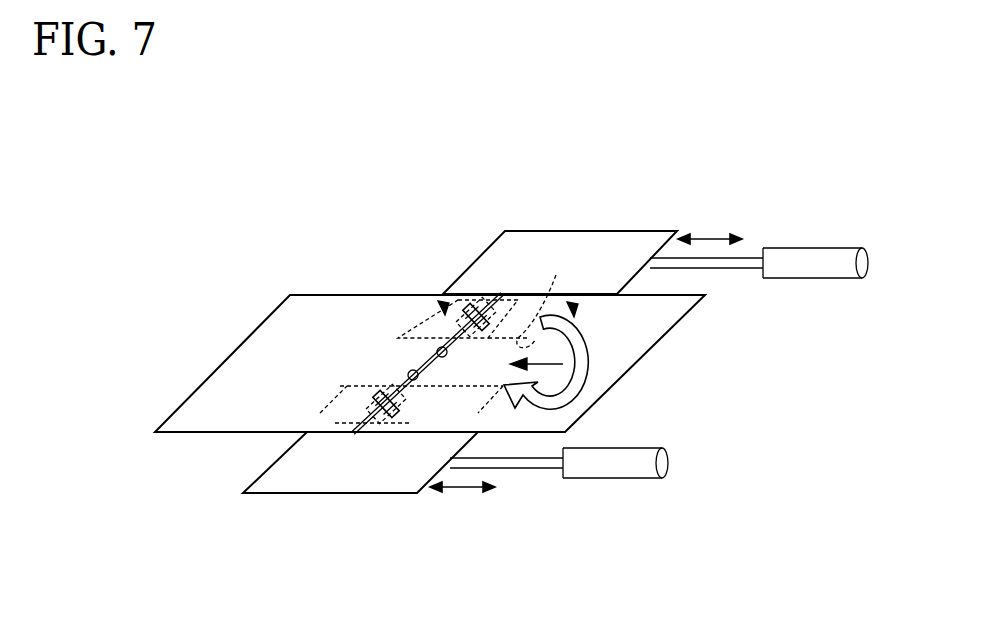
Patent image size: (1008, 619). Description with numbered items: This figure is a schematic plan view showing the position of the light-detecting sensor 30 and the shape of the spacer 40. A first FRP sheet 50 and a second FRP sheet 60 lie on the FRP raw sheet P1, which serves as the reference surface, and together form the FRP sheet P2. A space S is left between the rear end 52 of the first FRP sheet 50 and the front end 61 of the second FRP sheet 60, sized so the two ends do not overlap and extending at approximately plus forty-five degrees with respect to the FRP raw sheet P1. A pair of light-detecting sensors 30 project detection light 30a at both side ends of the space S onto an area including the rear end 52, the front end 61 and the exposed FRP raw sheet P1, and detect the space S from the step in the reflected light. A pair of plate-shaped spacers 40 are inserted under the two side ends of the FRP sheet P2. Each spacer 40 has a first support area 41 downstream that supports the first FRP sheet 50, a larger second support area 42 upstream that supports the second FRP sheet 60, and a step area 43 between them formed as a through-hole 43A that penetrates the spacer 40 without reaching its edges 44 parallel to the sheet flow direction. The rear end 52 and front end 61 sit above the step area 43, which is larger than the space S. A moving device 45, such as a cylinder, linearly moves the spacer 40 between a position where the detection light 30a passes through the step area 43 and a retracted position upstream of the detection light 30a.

The light-detecting sensor 30 is at (450, 293).
The detection light 30a is at (500, 320).
The spacer 40 is at (593, 231).
The first support area 41 is at (443, 302).
The second support area 42 is at (575, 306).
The step area 43 is at (463, 300).
The through-hole 43A is at (458, 319).
The edges 44 is at (556, 275).
The moving device 45 is at (812, 249).
The first FRP sheet 50 is at (253, 352).
The rear end 52 is at (440, 348).
The second FRP sheet 60 is at (620, 368).
The front end 61 is at (411, 370).
The space S is at (420, 378).
The FRP raw sheet P1 is at (427, 363).
The FRP sheet P2 is at (430, 363).